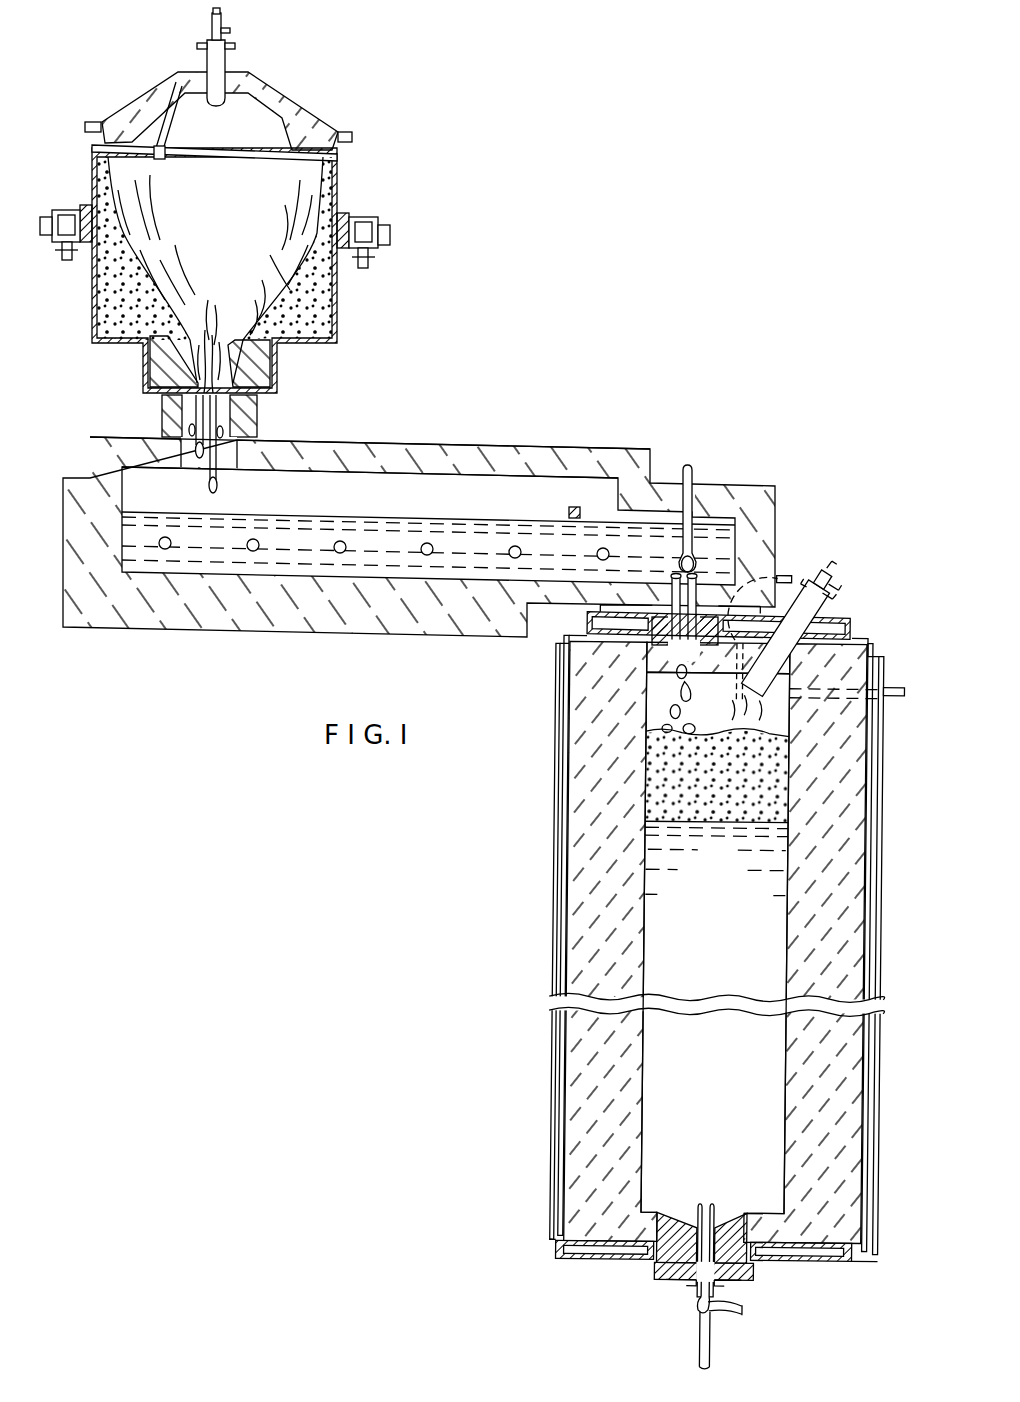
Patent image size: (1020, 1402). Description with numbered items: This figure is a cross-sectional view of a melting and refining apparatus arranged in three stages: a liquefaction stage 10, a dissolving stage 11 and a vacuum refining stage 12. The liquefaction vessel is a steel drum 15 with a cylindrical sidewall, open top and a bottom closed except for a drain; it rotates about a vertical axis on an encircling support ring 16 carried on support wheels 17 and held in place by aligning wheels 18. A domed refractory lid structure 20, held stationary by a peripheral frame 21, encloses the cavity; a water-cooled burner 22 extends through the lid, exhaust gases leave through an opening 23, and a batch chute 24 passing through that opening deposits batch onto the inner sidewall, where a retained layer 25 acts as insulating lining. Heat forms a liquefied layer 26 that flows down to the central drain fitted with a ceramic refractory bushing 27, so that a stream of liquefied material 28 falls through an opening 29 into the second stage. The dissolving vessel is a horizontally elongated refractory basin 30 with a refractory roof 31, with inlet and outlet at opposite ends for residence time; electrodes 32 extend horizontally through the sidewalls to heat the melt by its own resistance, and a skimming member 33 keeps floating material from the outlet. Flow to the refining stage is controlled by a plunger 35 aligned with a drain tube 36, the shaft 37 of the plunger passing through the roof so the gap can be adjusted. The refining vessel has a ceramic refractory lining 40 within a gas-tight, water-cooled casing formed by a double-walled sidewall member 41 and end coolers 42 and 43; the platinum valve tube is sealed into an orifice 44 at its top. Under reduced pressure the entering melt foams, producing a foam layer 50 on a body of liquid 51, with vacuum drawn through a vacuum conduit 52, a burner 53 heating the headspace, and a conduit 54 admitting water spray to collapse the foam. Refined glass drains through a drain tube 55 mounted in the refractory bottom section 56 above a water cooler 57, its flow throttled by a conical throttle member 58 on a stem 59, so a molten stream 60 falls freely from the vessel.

The liquefaction stage 10 is at (246, 222).
The dissolving stage 11 is at (419, 540).
The vacuum refining stage 12 is at (703, 951).
The drum 15 is at (333, 325).
The support ring 16 is at (375, 215).
The support wheels 17 is at (66, 262).
The aligning wheels 18 is at (45, 218).
The lid structure 20 is at (278, 100).
The peripheral frame 21 is at (350, 136).
The burner 22 is at (226, 74).
The exhaust opening 23 is at (171, 122).
The batch chute 24 is at (163, 158).
The batch layer 25 is at (320, 212).
The liquefied layer 26 is at (298, 263).
The ceramic refractory bushing 27 is at (245, 345).
The stream of liquefied material 28 is at (217, 482).
The opening 29 is at (188, 466).
The refractory basin 30 is at (462, 638).
The refractory roof 31 is at (456, 441).
The electrodes 32 is at (427, 555).
The skimming member 33 is at (568, 512).
The plunger 35 is at (680, 562).
The drain tube 36 is at (668, 579).
The shaft 37 is at (691, 470).
The ceramic refractory lining 40 is at (648, 961).
The sidewall member 41 is at (556, 1120).
The end cooler 42 is at (855, 629).
The end cooler 43 is at (610, 1263).
The orifice 44 is at (691, 676).
The foam layer 50 is at (722, 784).
The body of liquid 51 is at (722, 919).
The vacuum conduit 52 is at (893, 687).
The burner 53 is at (833, 574).
The conduit 54 is at (783, 577).
The drain tube 55 is at (703, 1213).
The refractory bottom section 56 is at (724, 1219).
The water cooler 57 is at (665, 1281).
The conical throttle member 58 is at (705, 1313).
The stem 59 is at (752, 1308).
The molten stream 60 is at (719, 1327).